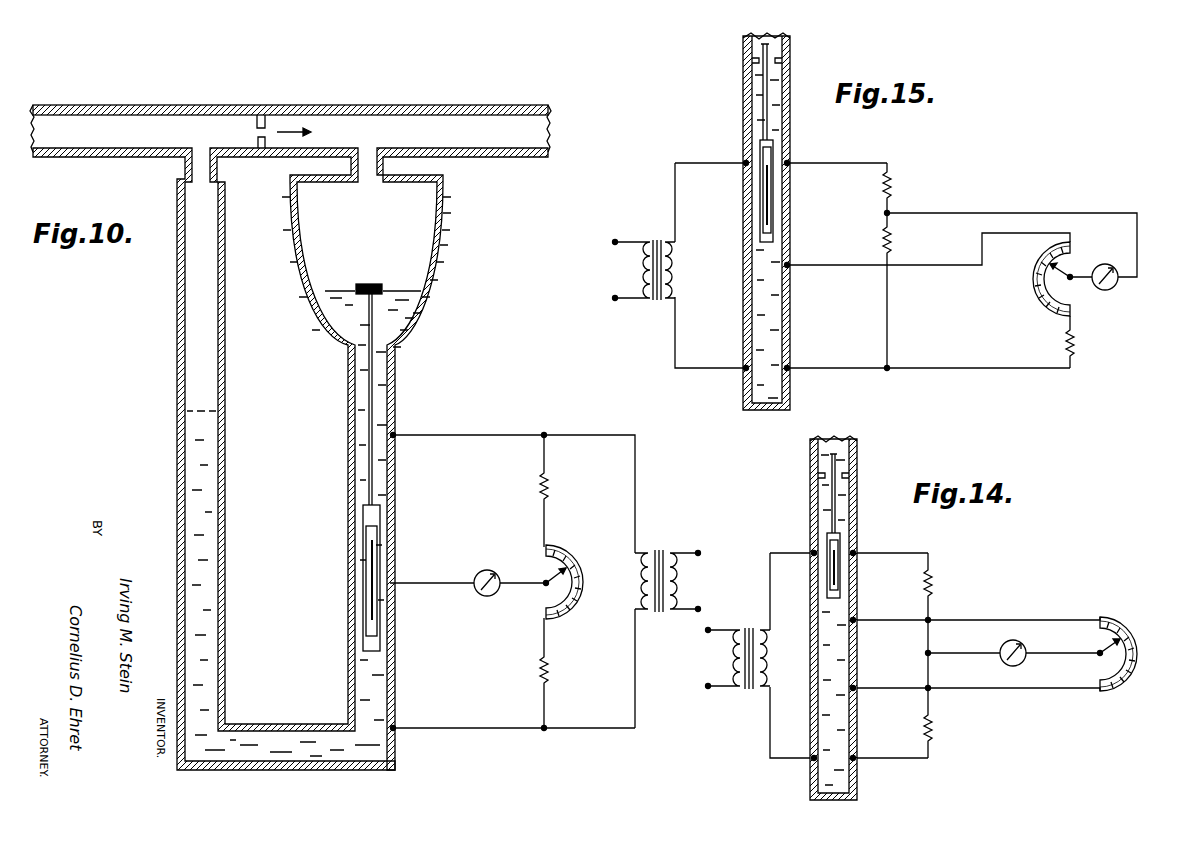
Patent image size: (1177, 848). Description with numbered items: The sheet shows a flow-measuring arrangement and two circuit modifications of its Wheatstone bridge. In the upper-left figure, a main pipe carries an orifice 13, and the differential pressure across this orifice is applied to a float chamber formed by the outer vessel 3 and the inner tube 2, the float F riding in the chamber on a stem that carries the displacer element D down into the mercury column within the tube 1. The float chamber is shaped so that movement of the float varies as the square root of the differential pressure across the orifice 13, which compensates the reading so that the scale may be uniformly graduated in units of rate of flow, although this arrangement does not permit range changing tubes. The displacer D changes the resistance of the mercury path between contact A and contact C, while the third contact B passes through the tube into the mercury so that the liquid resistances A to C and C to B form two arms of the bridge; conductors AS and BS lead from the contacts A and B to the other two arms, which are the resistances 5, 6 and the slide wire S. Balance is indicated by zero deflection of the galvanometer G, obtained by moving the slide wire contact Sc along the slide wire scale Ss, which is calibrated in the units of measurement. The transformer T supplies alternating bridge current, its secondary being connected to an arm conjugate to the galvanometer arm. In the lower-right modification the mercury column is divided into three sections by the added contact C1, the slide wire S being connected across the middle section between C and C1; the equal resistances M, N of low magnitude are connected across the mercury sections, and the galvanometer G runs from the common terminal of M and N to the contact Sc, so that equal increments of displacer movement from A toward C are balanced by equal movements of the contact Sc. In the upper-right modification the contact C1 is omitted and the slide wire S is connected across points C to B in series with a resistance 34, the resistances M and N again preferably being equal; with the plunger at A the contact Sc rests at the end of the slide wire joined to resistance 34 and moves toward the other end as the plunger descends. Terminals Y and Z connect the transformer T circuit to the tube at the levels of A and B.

In FIG. 10, the orifice 13 is at (262, 128).
In FIG. 10, the outer vessel 3 is at (177, 401).
In FIG. 10, the tube wall 1 is at (396, 547).
In FIG. 10, the inner tube with funnel 2 is at (343, 400).
In FIG. 10, the float F is at (370, 284).
In FIG. 10, the displacer element D is at (363, 526).
In FIG. 15, the displacer element D is at (769, 223).
In FIG. 14, the displacer element D is at (833, 581).
In FIG. 10, the contact A is at (395, 434).
In FIG. 15, the contact A is at (790, 166).
In FIG. 14, the contact A is at (855, 556).
In FIG. 10, the upper conductor AS is at (488, 435).
In FIG. 15, the upper conductor AS is at (833, 162).
In FIG. 10, the third contact B is at (398, 736).
In FIG. 15, the third contact B is at (790, 370).
In FIG. 14, the third contact B is at (855, 761).
In FIG. 10, the lower conductor BS is at (491, 730).
In FIG. 15, the lower conductor BS is at (848, 371).
In FIG. 10, the contact C is at (395, 586).
In FIG. 15, the contact C is at (790, 268).
In FIG. 14, the contact C is at (855, 623).
In FIG. 14, the contact C1 is at (855, 691).
In FIG. 10, the resistance 5 is at (548, 487).
In FIG. 10, the resistance 6 is at (548, 670).
In FIG. 10, the slide wire S is at (558, 571).
In FIG. 15, the slide wire S is at (1063, 263).
In FIG. 14, the slide wire S is at (1105, 669).
In FIG. 10, the slide wire contact Sc is at (552, 580).
In FIG. 15, the slide wire contact Sc is at (1058, 281).
In FIG. 14, the slide wire contact Sc is at (1114, 642).
In FIG. 10, the slide wire scale Ss is at (575, 618).
In FIG. 15, the slide wire scale Ss is at (1027, 293).
In FIG. 14, the slide wire scale Ss is at (1129, 620).
In FIG. 10, the galvanometer G is at (483, 597).
In FIG. 15, the galvanometer G is at (1115, 289).
In FIG. 14, the galvanometer G is at (1003, 662).
In FIG. 10, the transformer T is at (655, 550).
In FIG. 15, the transformer T is at (650, 240).
In FIG. 14, the transformer T is at (750, 689).
In FIG. 15, the terminal Y is at (743, 168).
In FIG. 14, the terminal Y is at (811, 558).
In FIG. 15, the terminal Z is at (746, 372).
In FIG. 14, the terminal Z is at (812, 763).
In FIG. 15, the resistance M is at (890, 183).
In FIG. 14, the resistance M is at (932, 586).
In FIG. 15, the resistance N is at (890, 252).
In FIG. 14, the resistance N is at (932, 731).
In FIG. 15, the resistance 34 is at (1074, 348).